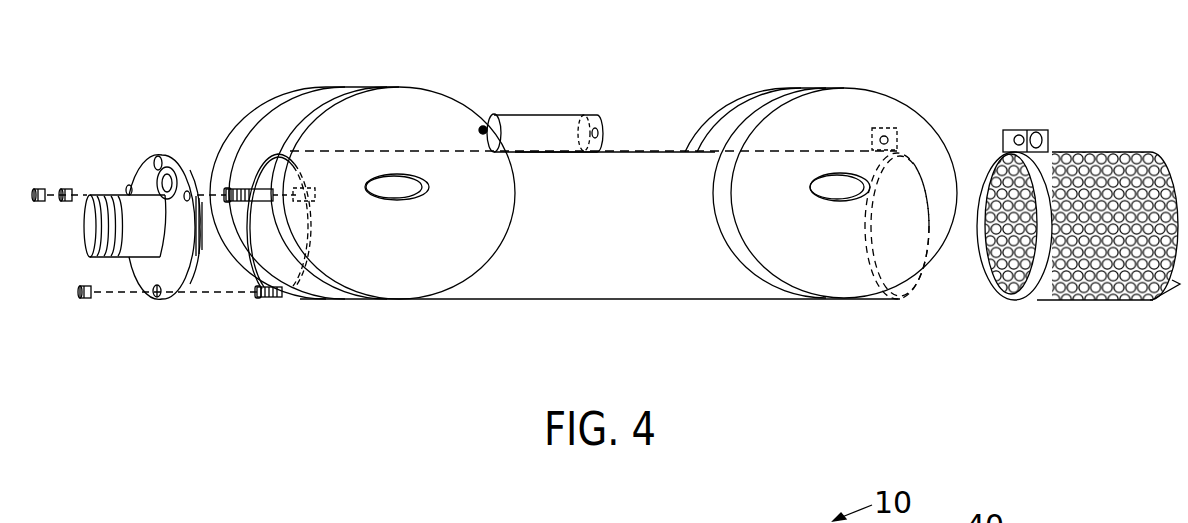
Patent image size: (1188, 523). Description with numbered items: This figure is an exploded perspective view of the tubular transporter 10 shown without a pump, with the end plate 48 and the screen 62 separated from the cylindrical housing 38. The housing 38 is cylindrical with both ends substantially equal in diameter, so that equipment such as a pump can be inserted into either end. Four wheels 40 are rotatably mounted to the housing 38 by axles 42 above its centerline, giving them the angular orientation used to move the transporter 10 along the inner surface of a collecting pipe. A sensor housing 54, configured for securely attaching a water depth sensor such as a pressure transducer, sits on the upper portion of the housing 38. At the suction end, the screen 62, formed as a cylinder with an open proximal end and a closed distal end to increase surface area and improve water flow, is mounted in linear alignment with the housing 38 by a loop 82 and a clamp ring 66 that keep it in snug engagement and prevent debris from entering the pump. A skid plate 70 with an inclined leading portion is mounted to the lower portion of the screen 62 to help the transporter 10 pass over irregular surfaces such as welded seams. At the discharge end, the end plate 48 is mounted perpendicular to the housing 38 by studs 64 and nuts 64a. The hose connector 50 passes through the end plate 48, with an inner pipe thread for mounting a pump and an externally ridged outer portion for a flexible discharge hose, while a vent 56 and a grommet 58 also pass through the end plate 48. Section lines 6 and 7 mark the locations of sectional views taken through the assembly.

The tubular transporter 10 is at (693, 346).
The cylindrical housing 38 is at (633, 157).
The wheels 40 is at (882, 105).
The axles 42 is at (833, 209).
The end plate 48 is at (168, 272).
The hose connector 50 is at (89, 193).
The sensor housing 54 is at (548, 115).
The vent 56 is at (156, 158).
The grommet 58 is at (173, 170).
The screen 62 is at (1068, 150).
The studs 64 is at (262, 298).
The nuts 64a is at (86, 300).
The clamp ring 66 is at (985, 258).
The skid plate 70 is at (1135, 300).
The loop 82 is at (897, 140).
The section line 6- 6 is at (193, 350).
The section line 7- 7 is at (920, 350).